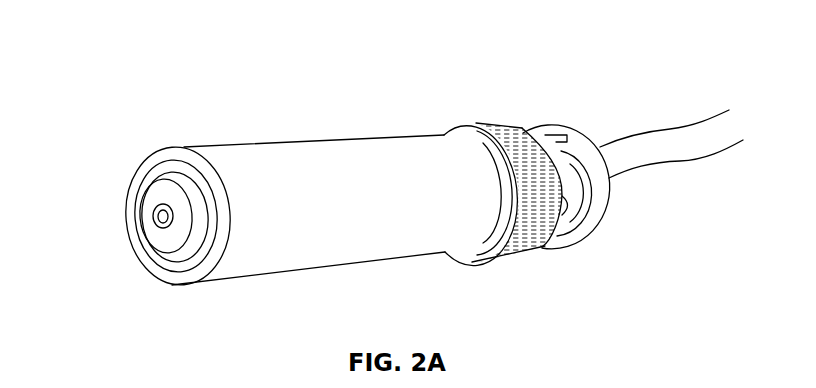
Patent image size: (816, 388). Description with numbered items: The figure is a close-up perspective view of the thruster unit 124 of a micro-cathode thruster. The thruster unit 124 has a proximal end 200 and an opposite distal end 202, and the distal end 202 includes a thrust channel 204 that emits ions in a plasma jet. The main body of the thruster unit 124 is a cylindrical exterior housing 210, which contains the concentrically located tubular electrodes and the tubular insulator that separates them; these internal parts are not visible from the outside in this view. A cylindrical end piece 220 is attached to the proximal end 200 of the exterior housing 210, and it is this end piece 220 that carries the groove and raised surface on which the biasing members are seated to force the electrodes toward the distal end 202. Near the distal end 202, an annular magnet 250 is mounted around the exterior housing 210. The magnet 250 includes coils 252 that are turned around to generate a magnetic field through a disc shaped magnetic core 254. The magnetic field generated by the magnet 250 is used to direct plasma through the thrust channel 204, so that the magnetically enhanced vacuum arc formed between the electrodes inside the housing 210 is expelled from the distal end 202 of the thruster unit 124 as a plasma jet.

The thruster unit 124 is at (163, 54).
The proximal end 200 is at (137, 253).
The distal end 202 is at (681, 116).
The thrust channel 204 is at (697, 148).
The cylindrical exterior housing 210 is at (355, 235).
The cylindrical end piece 220 is at (157, 198).
The annular magnet 250 is at (547, 130).
The coils 252 is at (588, 137).
The disc shaped magnetic core 254 is at (558, 133).